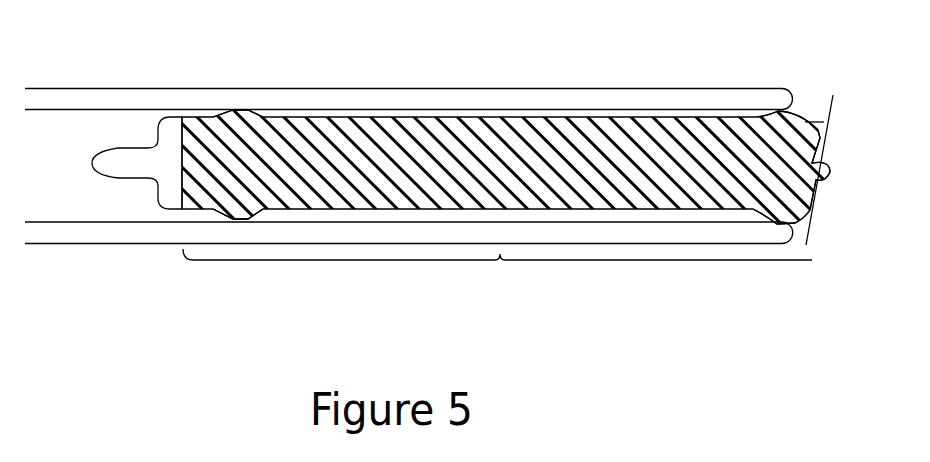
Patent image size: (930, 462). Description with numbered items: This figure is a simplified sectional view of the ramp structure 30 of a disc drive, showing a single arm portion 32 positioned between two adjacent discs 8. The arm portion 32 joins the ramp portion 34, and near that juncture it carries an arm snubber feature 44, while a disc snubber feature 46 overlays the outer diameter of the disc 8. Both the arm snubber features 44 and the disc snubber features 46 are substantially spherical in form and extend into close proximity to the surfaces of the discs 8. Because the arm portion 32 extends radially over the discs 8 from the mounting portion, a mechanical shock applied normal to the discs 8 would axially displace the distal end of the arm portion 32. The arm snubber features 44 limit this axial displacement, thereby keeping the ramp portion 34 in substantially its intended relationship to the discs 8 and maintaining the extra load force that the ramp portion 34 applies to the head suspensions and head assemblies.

The disc 8 is at (57, 95).
The ramp structure 30 is at (480, 117).
The arm portion 32 is at (500, 260).
The ramp portion 34 is at (179, 248).
The arm snubber feature 44 is at (248, 110).
The disc snubber feature 46 is at (777, 112).